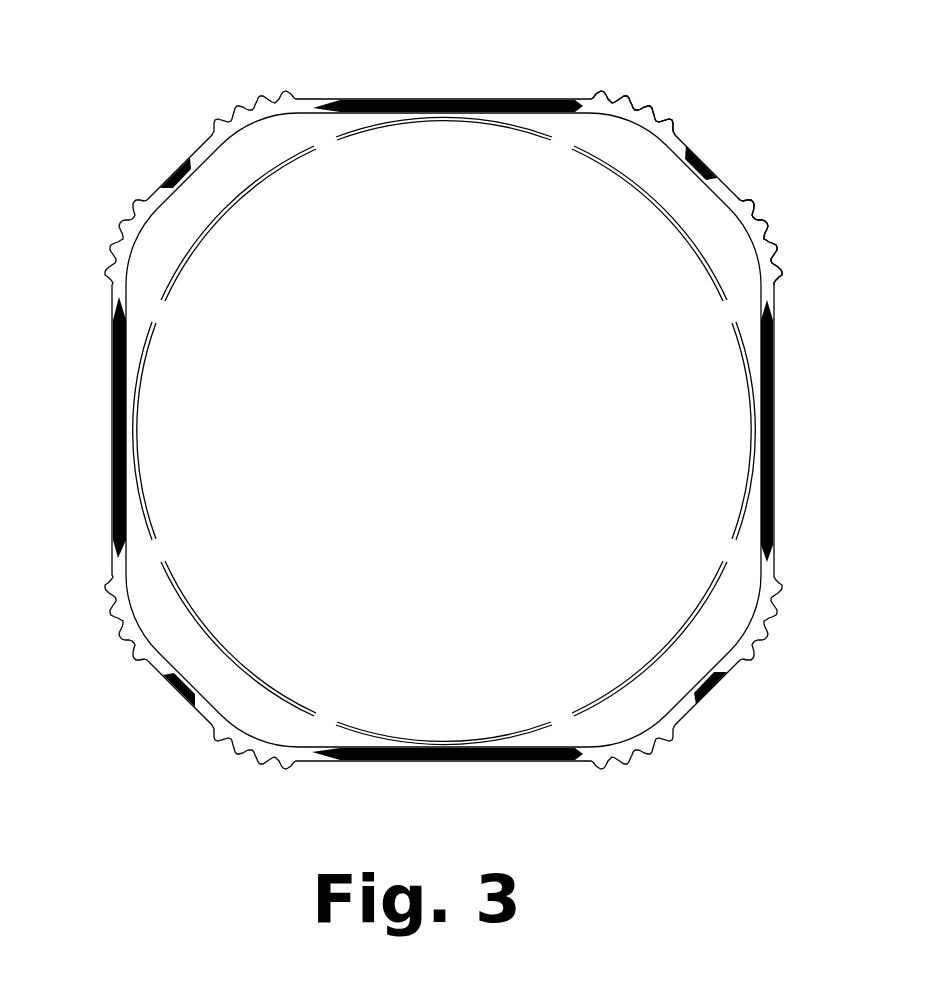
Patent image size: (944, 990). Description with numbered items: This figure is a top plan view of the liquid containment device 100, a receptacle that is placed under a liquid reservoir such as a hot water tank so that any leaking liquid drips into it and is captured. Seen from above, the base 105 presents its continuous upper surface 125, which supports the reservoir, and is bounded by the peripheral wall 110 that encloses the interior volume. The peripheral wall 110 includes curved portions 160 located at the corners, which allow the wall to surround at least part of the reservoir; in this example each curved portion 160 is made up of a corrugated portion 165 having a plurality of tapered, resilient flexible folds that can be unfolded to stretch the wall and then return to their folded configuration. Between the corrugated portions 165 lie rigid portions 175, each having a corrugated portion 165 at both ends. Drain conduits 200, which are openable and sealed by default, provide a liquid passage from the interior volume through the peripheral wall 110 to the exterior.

The liquid containment device 100 is at (540, 55).
The base 105 is at (623, 643).
The peripheral wall 110 is at (770, 570).
The upper surface 125 is at (733, 452).
The curved portion 160 is at (217, 110).
The corrugated portion 165 is at (300, 67).
The rigid portion 175 is at (383, 58).
The drain conduit 200 is at (177, 180).